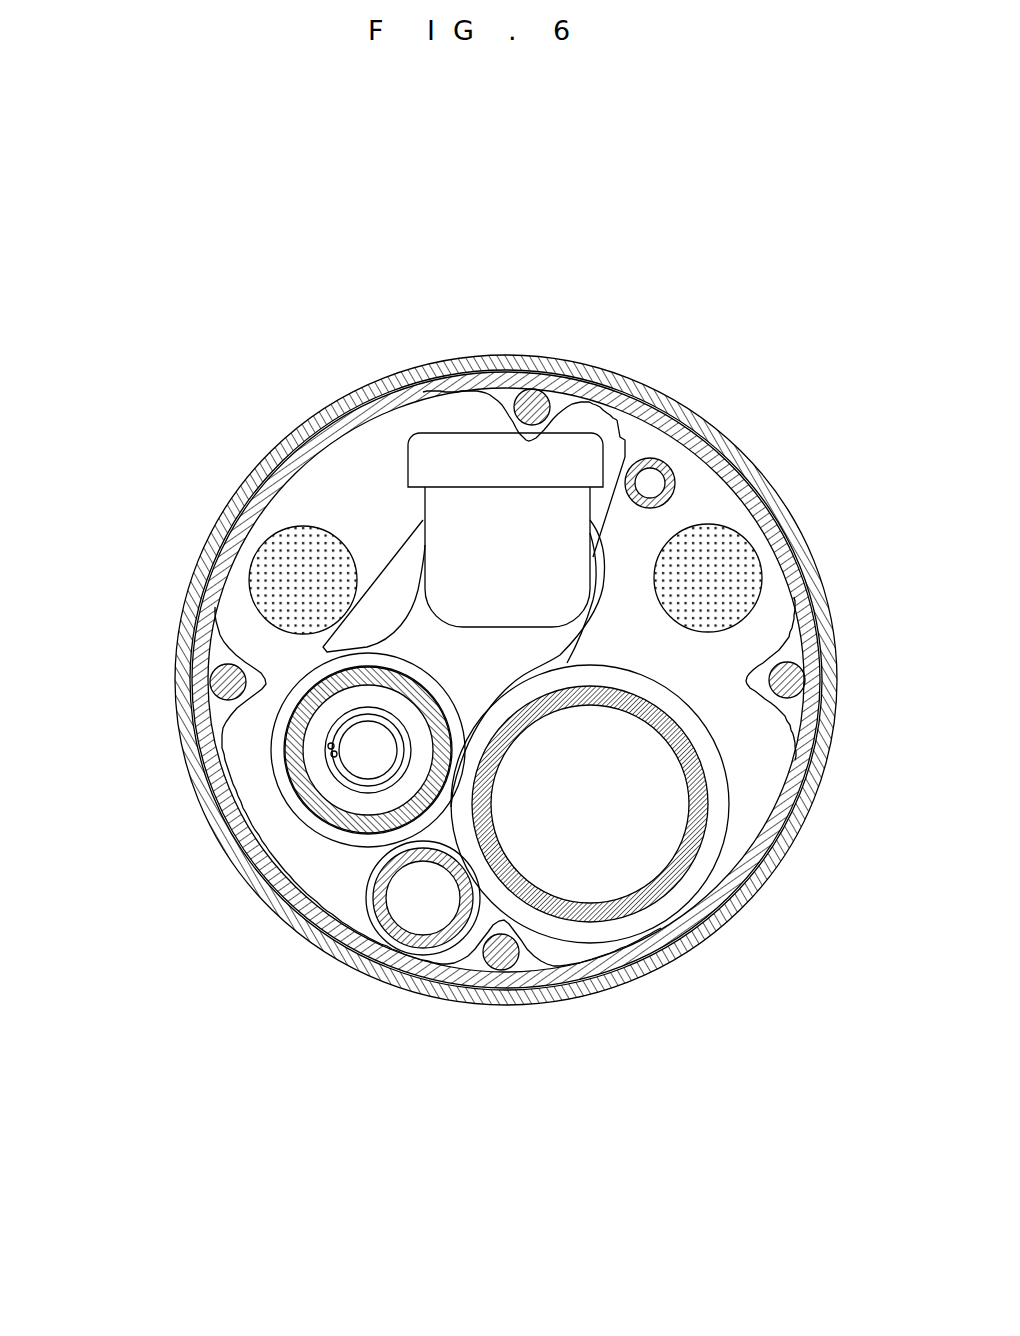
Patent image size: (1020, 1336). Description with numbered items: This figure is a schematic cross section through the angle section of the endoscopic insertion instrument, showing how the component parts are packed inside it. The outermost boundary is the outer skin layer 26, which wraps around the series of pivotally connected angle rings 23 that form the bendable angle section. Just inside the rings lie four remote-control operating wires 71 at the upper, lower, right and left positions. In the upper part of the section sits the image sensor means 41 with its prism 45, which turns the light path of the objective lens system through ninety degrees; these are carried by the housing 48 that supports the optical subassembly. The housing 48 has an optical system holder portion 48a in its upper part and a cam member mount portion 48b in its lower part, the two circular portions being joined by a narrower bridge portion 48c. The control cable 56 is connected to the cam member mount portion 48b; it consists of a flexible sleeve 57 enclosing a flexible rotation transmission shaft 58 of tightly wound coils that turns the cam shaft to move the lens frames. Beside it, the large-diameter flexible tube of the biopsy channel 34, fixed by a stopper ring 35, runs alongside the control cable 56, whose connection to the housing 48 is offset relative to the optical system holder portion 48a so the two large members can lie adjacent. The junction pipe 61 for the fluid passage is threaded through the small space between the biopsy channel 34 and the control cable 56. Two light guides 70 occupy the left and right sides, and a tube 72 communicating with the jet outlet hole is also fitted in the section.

The angle ring 23 is at (343, 417).
The outer skin layer 26 is at (740, 447).
The biopsy channel 34 is at (667, 887).
The stopper ring 35 is at (720, 803).
The image sensor means 41 is at (460, 450).
The prism 45 is at (455, 535).
The housing 48 is at (593, 622).
The optical system holder portion 48a is at (620, 415).
The cam member mount portion 48b is at (267, 746).
The bridge portion 48c is at (413, 633).
The control cable 56 is at (345, 832).
The flexible sleeve 57 is at (288, 772).
The flexible rotation transmission shaft 58 is at (337, 778).
The junction pipe 61 is at (413, 937).
The light guide 70 is at (277, 567).
The remote-control operating wire 71 is at (533, 398).
The tube 72 is at (660, 460).